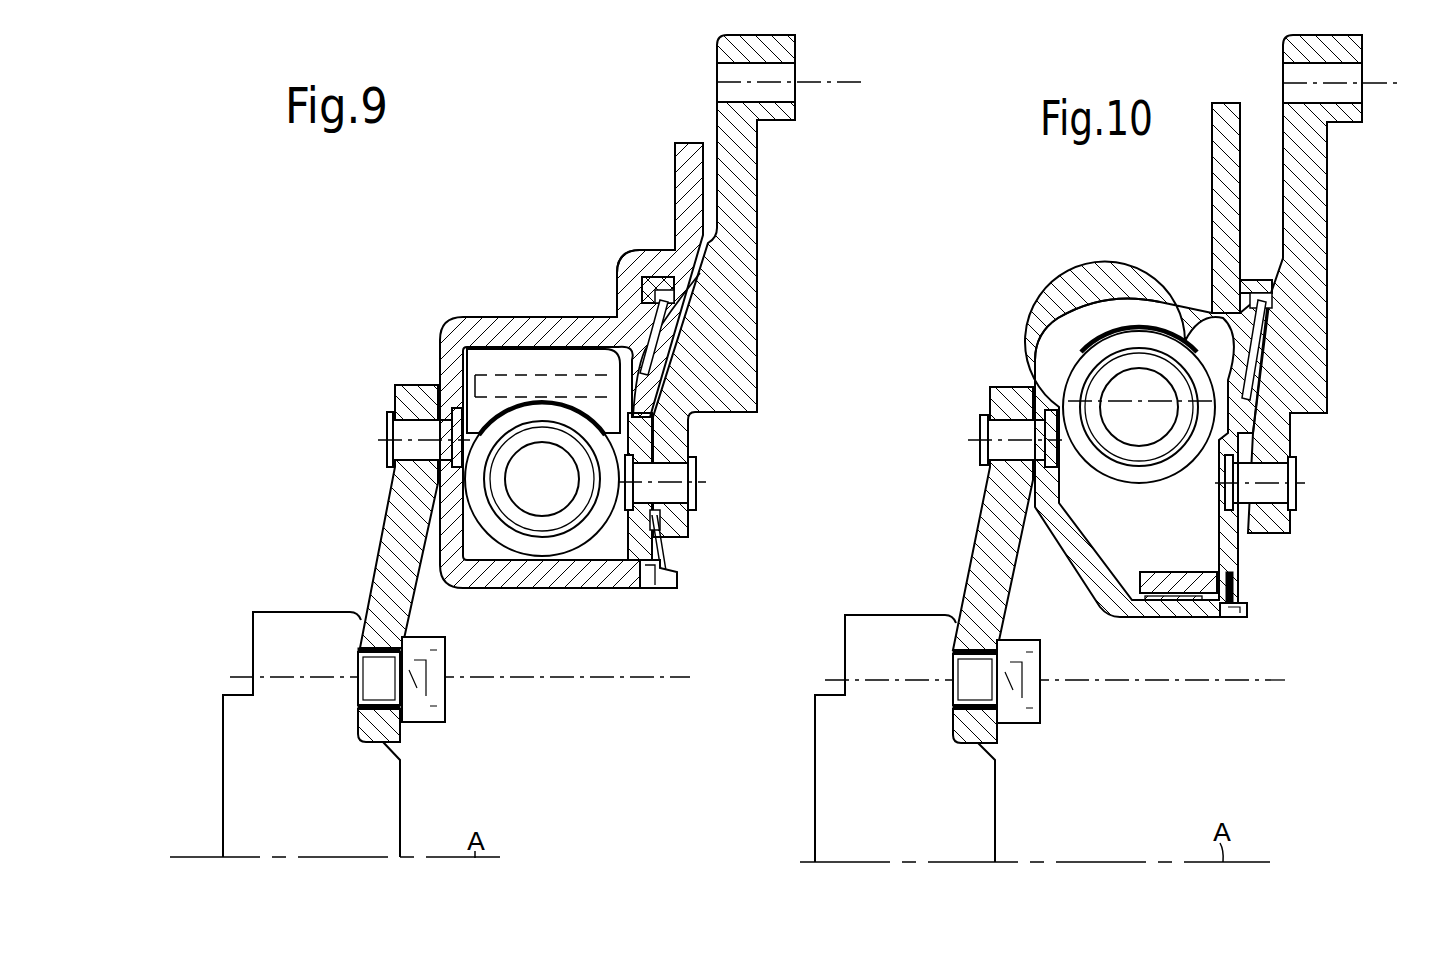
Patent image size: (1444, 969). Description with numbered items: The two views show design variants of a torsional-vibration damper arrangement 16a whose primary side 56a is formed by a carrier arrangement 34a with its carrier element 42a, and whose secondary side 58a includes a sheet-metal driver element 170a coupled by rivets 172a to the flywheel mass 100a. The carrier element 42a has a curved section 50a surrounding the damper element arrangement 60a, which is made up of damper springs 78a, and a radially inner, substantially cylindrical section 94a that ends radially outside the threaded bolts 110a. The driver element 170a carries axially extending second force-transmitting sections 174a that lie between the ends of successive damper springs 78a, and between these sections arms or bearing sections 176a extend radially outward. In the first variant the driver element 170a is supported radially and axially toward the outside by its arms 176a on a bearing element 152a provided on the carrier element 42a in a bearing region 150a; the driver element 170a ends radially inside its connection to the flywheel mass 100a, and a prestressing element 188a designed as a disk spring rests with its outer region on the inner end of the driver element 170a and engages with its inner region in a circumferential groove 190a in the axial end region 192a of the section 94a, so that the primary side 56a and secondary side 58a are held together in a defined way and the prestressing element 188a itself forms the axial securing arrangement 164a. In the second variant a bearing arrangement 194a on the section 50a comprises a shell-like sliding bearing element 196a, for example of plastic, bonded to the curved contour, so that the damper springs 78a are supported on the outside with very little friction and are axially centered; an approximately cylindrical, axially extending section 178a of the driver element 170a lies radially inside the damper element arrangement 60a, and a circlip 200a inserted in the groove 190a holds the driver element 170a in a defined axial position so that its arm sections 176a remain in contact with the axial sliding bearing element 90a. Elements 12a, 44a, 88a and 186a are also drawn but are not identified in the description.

In FIG. 9, the hub 12a is at (253, 628).
In FIG. 10, the hub 12a is at (997, 782).
In FIG. 9, the torsional-vibration damper arrangement 16a is at (643, 98).
In FIG. 10, the torsional-vibration damper arrangement 16a is at (1167, 195).
In FIG. 9, the carrier arrangement 34a is at (650, 165).
In FIG. 9, the carrier element 42a is at (675, 193).
In FIG. 10, the carrier element 42a is at (1211, 163).
In FIG. 9, the steering knuckle arm 44a is at (385, 517).
In FIG. 10, the section of the carrier element 50a is at (1127, 297).
In FIG. 9, the primary side 56a is at (467, 242).
In FIG. 10, the primary side 56a is at (1197, 233).
In FIG. 9, the secondary side 58a is at (768, 298).
In FIG. 10, the secondary side 58a is at (1345, 297).
In FIG. 9, the damper element arrangement 60a is at (607, 537).
In FIG. 10, the damper element arrangement 60a is at (1087, 475).
In FIG. 10, the damper springs 78a is at (1173, 440).
In FIG. 10, the sealing strip 88a is at (1153, 613).
In FIG. 10, the sliding bearing element 90a is at (1258, 280).
In FIG. 9, the section of the carrier element 94a is at (562, 577).
In FIG. 10, the section of the carrier element 94a is at (1180, 613).
In FIG. 9, the flywheel mass 100a is at (758, 180).
In FIG. 10, the flywheel mass 100a is at (1328, 210).
In FIG. 9, the threaded bolts 110a is at (445, 695).
In FIG. 9, the bearing region 150a is at (607, 258).
In FIG. 9, the bearing element 152a is at (680, 285).
In FIG. 9, the axial securing arrangement 164a is at (697, 547).
In FIG. 10, the axial securing arrangement 164a is at (1270, 572).
In FIG. 9, the driver element 170a is at (640, 427).
In FIG. 10, the driver element 170a is at (1242, 543).
In FIG. 9, the rivets 172a is at (673, 473).
In FIG. 9, the second force-transmitting section 174a is at (483, 370).
In FIG. 10, the second force-transmitting section 174a is at (1142, 387).
In FIG. 9, the bearing sections 176a is at (655, 337).
In FIG. 10, the bearing sections 176a is at (1252, 335).
In FIG. 10, the axially extending section 178a is at (1197, 590).
In FIG. 9, the spacer 186a is at (652, 528).
In FIG. 9, the prestressing element 188a is at (662, 552).
In FIG. 9, the circumferential groove 190a is at (650, 573).
In FIG. 10, the circumferential groove 190a is at (1240, 617).
In FIG. 9, the axial end region 192a is at (677, 582).
In FIG. 10, the bearing arrangement 194a is at (1067, 353).
In FIG. 10, the sliding bearing element 196a is at (1162, 327).
In FIG. 10, the circlip 200a is at (1236, 598).